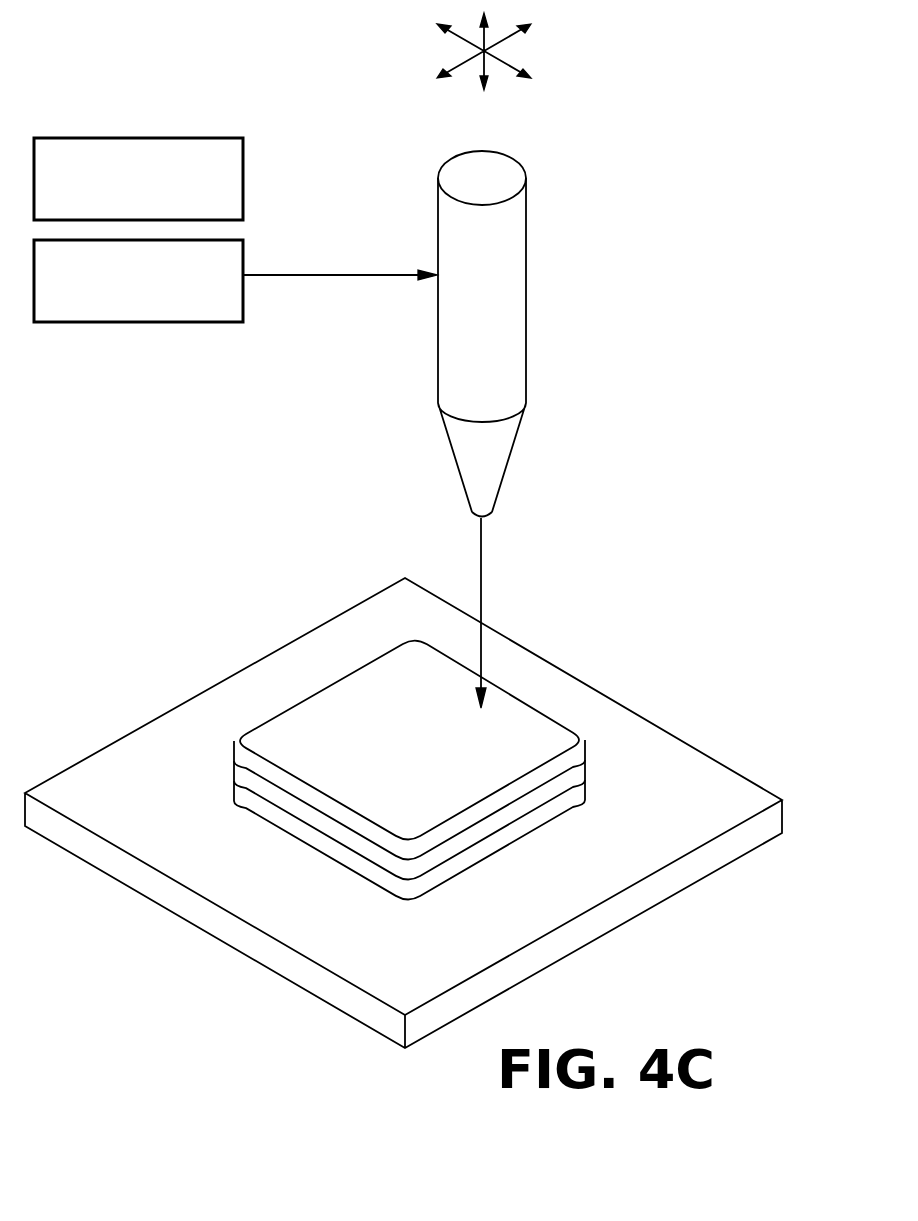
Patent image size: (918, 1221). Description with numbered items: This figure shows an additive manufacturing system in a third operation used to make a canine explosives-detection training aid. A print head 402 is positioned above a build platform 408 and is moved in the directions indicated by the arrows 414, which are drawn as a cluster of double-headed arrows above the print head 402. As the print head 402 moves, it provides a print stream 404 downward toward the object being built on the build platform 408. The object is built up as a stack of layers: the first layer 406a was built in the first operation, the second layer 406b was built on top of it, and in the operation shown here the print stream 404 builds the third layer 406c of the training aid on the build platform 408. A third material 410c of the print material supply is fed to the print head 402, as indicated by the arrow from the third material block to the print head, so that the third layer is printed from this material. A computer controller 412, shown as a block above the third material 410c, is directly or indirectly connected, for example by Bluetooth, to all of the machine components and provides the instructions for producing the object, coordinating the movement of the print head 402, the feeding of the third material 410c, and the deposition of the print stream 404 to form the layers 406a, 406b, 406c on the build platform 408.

The print head 402 is at (510, 328).
The print stream 404 is at (483, 592).
The first layer 406a is at (567, 805).
The second layer 406b is at (512, 815).
The third layer 406c is at (438, 840).
The build platform 408 is at (160, 808).
The third material 410c is at (152, 322).
The computer controller 412 is at (103, 137).
The arrows 414 is at (507, 62).